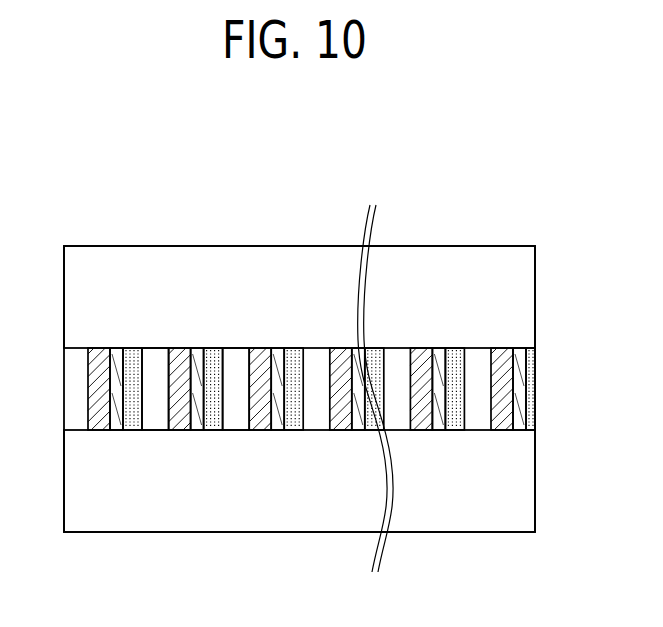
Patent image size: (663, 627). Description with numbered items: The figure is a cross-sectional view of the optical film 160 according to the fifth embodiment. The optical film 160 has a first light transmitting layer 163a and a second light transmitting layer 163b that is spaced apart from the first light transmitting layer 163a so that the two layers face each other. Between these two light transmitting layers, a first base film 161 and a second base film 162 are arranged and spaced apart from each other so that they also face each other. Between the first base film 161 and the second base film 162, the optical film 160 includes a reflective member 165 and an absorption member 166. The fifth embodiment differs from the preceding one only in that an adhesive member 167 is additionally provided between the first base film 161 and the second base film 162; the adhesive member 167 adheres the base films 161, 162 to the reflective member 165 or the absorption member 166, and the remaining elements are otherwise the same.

The optical film 160 is at (59, 162).
The first base film 161 is at (157, 367).
The second base film 162 is at (236, 365).
The first light transmitting layer 163a is at (525, 483).
The second light transmitting layer 163b is at (525, 299).
The reflective member 165 is at (180, 422).
The absorption member 166 is at (197, 365).
The adhesive member 167 is at (214, 422).